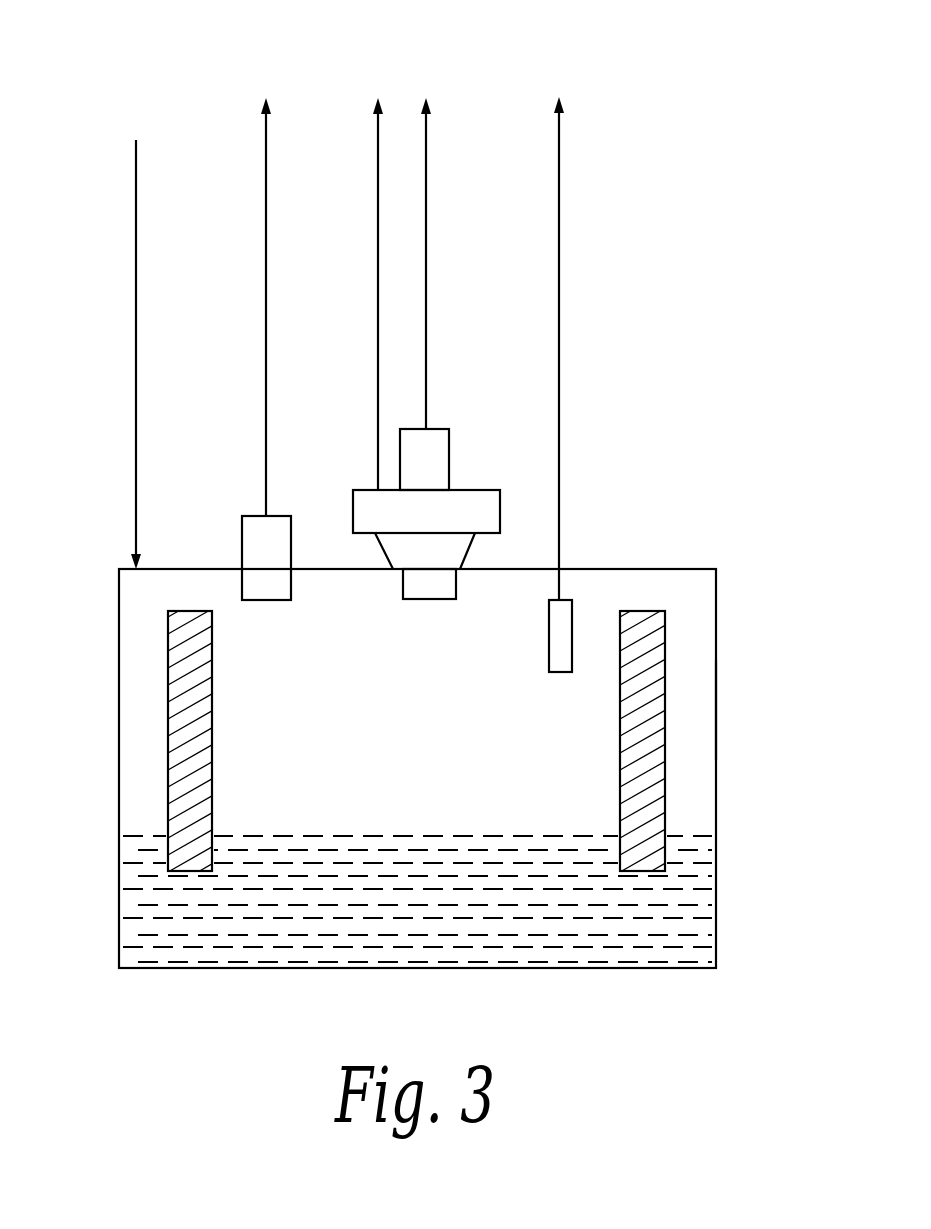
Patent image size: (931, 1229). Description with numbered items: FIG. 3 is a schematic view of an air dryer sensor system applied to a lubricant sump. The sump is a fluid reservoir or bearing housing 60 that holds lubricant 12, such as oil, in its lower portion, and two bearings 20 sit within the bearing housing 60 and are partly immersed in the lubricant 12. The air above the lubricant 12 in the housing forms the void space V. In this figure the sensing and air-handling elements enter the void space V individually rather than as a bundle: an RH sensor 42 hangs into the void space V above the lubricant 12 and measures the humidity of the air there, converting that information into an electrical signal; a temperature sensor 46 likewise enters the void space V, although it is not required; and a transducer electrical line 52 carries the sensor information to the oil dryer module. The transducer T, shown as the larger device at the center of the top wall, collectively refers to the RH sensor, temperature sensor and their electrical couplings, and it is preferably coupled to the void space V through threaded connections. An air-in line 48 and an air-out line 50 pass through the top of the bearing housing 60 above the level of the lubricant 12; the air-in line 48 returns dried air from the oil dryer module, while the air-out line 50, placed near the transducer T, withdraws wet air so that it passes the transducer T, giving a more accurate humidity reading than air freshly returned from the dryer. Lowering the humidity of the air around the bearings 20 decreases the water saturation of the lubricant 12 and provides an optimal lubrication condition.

The lubricant 12 is at (654, 944).
The bearings 20 is at (620, 722).
The RH sensor 42 is at (266, 352).
The temperature sensor 46 is at (559, 316).
The air-in line 48 is at (378, 130).
The air-out line 50 is at (136, 350).
The transducer electrical line 52 is at (426, 130).
The bearing housing 60 is at (716, 630).
The void space V is at (685, 740).
The transducer T is at (468, 512).